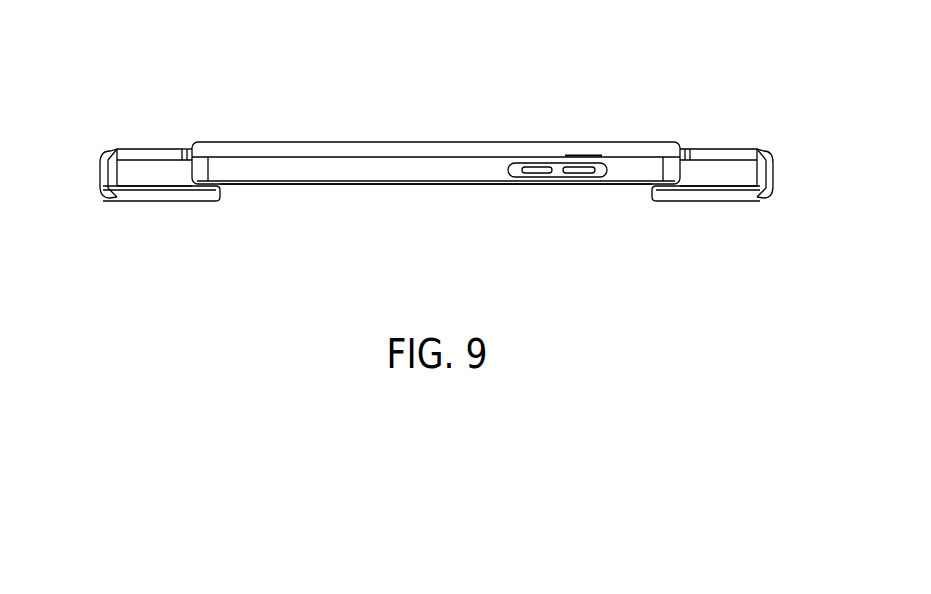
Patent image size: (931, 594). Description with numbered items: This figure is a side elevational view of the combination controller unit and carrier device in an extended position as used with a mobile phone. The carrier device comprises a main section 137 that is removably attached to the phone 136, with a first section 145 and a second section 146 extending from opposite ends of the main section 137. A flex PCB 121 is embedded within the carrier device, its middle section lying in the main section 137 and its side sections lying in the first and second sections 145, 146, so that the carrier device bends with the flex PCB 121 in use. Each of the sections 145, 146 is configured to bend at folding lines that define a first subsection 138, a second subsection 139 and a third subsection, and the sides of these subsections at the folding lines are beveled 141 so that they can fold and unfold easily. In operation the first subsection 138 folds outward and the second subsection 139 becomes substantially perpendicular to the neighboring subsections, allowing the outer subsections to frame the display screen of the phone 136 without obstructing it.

The flex PCB 121 is at (763, 158).
The phone 136 is at (316, 185).
The main section 137 is at (280, 148).
The first subsection 138 is at (150, 152).
The second subsection 139 is at (112, 177).
The beveled sides 141 is at (755, 200).
The first section 145 is at (190, 109).
The second section 146 is at (708, 120).